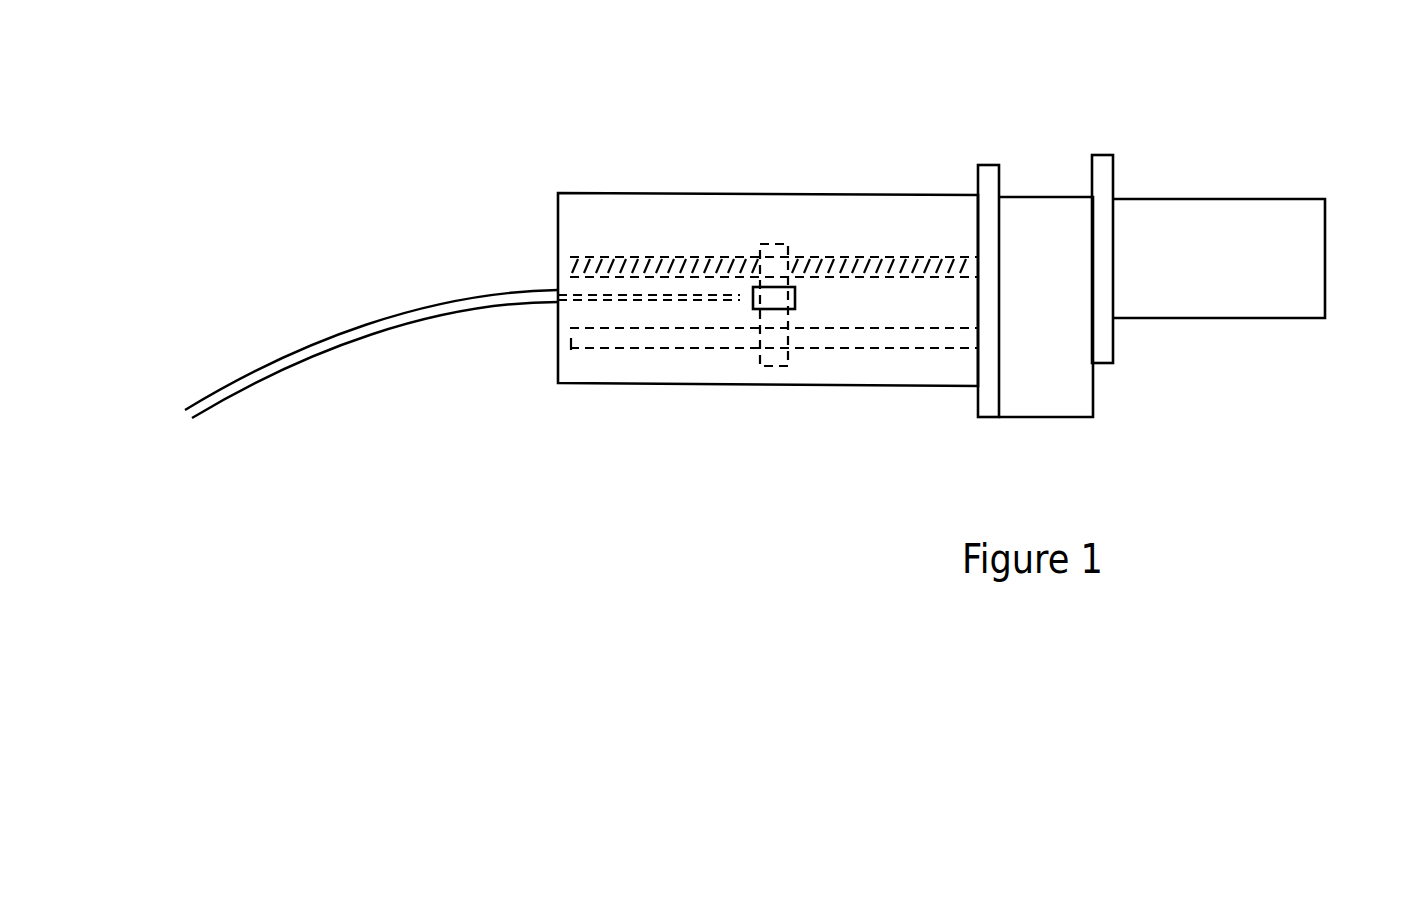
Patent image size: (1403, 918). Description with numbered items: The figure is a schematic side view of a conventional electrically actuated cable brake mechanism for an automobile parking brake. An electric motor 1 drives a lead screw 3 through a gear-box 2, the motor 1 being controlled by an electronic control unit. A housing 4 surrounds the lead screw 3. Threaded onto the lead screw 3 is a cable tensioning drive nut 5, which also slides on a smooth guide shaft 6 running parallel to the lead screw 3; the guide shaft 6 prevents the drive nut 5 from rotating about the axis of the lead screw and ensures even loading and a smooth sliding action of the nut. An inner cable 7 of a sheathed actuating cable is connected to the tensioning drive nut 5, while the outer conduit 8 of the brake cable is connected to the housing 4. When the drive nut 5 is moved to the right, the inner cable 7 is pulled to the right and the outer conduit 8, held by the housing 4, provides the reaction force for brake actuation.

The electric motor 1 is at (1215, 199).
The gear-box 2 is at (1023, 197).
The lead screw 3 is at (837, 267).
The housing 4 is at (668, 193).
The cable tensioning drive nut 5 is at (763, 302).
The smooth guide shaft 6 is at (915, 343).
The inner cable 7 is at (607, 297).
The outer conduit 8 is at (390, 315).